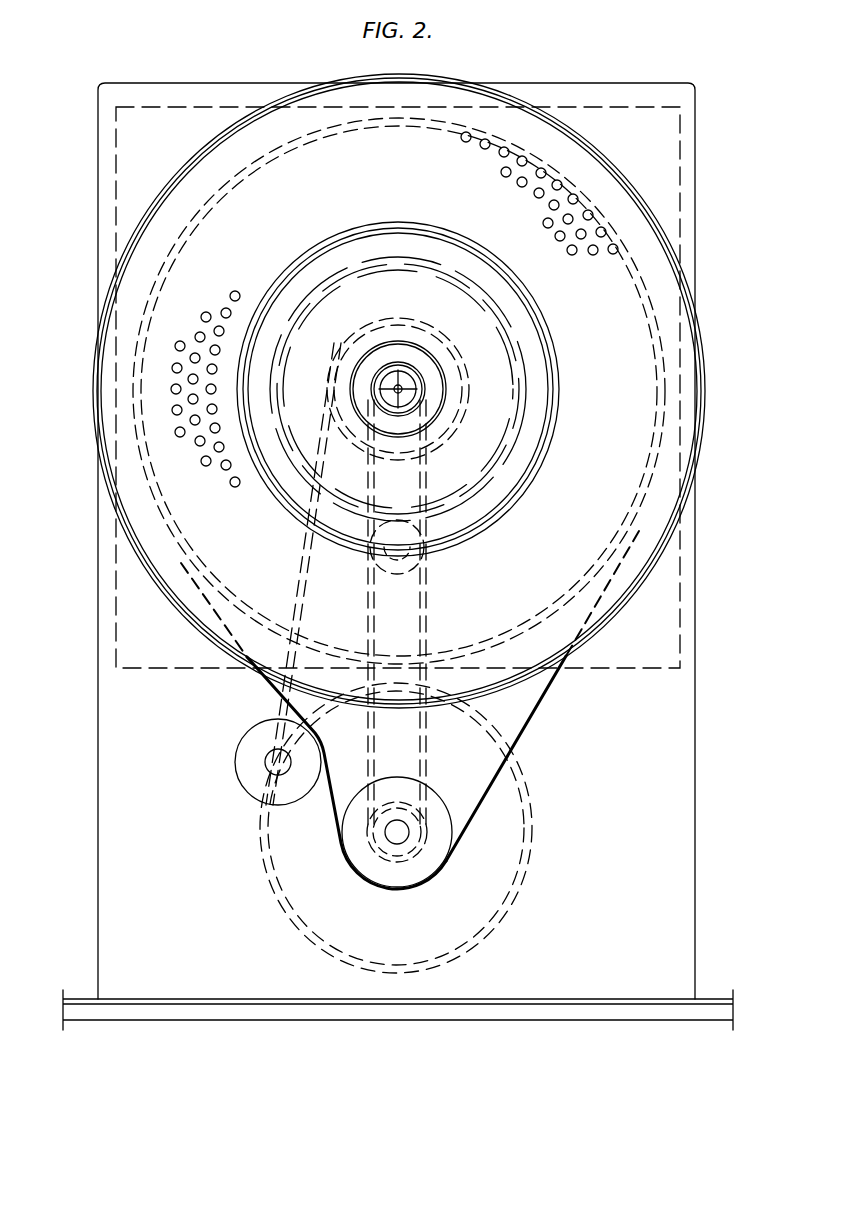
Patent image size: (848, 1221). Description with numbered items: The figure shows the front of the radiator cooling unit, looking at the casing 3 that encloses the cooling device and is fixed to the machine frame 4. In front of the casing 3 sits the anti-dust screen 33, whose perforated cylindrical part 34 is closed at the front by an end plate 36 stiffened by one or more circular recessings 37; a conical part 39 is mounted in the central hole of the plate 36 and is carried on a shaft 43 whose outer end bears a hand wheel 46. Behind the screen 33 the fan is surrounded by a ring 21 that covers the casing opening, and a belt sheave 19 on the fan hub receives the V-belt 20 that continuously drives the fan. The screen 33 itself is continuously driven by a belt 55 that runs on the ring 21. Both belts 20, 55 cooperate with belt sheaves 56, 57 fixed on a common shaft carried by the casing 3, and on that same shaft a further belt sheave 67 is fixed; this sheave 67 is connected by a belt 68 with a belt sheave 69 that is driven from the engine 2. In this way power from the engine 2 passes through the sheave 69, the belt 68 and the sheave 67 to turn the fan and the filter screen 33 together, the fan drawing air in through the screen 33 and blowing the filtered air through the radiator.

The engine 2 is at (180, 106).
The casing 3 is at (614, 85).
The machine frame 4 is at (168, 1008).
The belt sheave 19 is at (455, 437).
The V-belt 20 is at (510, 690).
The ring 21 is at (270, 640).
The screen 33 is at (673, 247).
The cylindrical part 34 is at (672, 507).
The end plate 36 is at (648, 385).
The circular recessings 37 is at (560, 368).
The conical part 39 is at (402, 247).
The shaft 43 is at (406, 378).
The hand wheel 46 is at (377, 380).
The belt 55 is at (527, 716).
The belt sheave 56 is at (520, 878).
The belt sheave 57 is at (363, 852).
The belt sheave 67 is at (365, 868).
The belt 68 is at (425, 750).
The belt sheave 69 is at (393, 578).